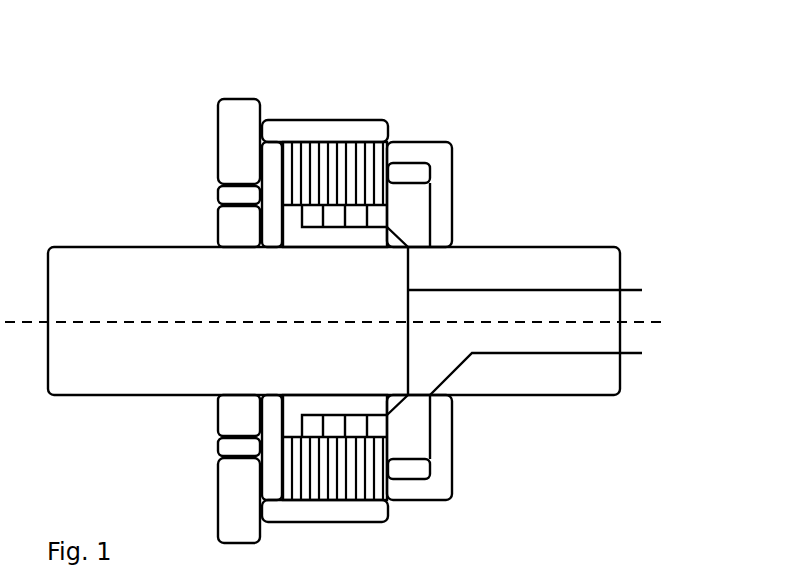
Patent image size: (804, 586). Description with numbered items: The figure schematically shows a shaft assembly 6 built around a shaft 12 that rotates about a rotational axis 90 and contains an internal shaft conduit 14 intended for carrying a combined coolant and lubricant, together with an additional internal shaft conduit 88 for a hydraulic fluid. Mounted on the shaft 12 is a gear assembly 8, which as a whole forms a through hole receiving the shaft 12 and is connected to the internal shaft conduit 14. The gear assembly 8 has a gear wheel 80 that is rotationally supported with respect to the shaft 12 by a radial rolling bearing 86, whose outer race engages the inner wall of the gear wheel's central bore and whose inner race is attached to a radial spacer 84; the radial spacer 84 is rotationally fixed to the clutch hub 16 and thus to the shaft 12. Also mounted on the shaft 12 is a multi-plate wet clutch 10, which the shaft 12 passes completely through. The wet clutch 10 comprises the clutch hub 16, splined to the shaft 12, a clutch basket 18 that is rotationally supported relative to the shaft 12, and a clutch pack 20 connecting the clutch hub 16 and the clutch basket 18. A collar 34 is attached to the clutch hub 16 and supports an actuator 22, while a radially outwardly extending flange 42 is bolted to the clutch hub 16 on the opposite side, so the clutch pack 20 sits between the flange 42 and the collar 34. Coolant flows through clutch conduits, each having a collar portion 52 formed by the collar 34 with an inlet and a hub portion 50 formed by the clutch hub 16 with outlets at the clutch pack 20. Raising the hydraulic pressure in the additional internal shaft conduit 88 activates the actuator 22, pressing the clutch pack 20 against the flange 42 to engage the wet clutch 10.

The shaft assembly 6 is at (98, 83).
The gear assembly 8 is at (275, 82).
The wet clutch 10 is at (362, 120).
The shaft 12 is at (575, 258).
The internal shaft conduit 14 is at (522, 290).
The clutch hub 16 is at (300, 236).
The clutch basket 18 is at (270, 132).
The clutch pack 20 is at (300, 182).
The actuator 22 is at (417, 472).
The collar 34 is at (438, 458).
The flange 42 is at (270, 172).
The hub portion 50 is at (375, 223).
The collar portion 52 is at (402, 238).
The gear wheel 80 is at (240, 488).
The radial spacer 84 is at (240, 418).
The radial rolling bearing 86 is at (240, 453).
The additional internal shaft conduit 88 is at (522, 353).
The rotational axis 90 is at (650, 318).